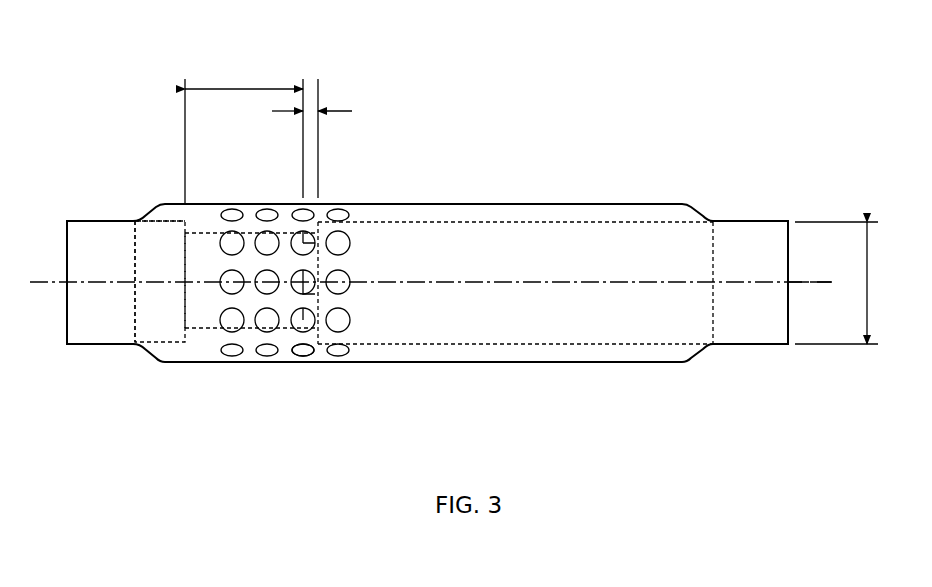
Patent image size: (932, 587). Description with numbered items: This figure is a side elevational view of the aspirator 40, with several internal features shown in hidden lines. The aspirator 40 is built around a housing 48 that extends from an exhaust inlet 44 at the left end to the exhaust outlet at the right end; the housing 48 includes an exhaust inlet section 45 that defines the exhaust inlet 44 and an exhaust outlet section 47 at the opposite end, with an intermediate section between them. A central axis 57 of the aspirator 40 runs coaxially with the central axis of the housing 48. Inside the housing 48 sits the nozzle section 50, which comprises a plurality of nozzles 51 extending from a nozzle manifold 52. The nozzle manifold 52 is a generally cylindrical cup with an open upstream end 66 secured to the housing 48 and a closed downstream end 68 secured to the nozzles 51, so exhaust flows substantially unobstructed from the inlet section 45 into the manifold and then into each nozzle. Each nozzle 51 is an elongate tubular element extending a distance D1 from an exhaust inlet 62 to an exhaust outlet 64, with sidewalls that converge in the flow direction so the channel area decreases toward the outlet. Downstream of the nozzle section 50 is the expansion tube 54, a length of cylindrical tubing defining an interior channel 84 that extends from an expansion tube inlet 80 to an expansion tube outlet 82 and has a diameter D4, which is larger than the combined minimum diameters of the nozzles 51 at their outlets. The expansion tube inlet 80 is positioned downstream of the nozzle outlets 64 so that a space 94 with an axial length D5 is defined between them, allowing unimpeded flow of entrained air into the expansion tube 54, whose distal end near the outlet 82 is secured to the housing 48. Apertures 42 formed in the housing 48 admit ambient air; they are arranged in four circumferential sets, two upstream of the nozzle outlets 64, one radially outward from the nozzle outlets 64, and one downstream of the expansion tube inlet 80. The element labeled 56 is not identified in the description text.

The aspirator 40 is at (518, 200).
The apertures 42 is at (347, 325).
The exhaust inlet 44 is at (67, 253).
The exhaust inlet section 45 is at (80, 220).
The exhaust outlet section 47 is at (745, 221).
The housing 48 is at (555, 330).
The nozzle section 50 is at (206, 330).
The nozzles 51 is at (200, 203).
The nozzle manifold 52 is at (155, 220).
The expansion tube 54 is at (604, 344).
The shell wall 56 is at (405, 203).
The central axis 57 is at (794, 282).
The exhaust inlet 62 is at (185, 268).
The exhaust outlet 64 is at (318, 300).
The open upstream end 66 is at (130, 262).
The closed downstream end 68 is at (189, 342).
The expansion tube inlet 80 is at (282, 344).
The expansion tube outlet 82 is at (713, 280).
The interior channel 84 is at (636, 230).
The space 94 is at (303, 357).
The distance D1 is at (240, 89).
The diameter D4 is at (868, 300).
The axial length D5 is at (340, 111).